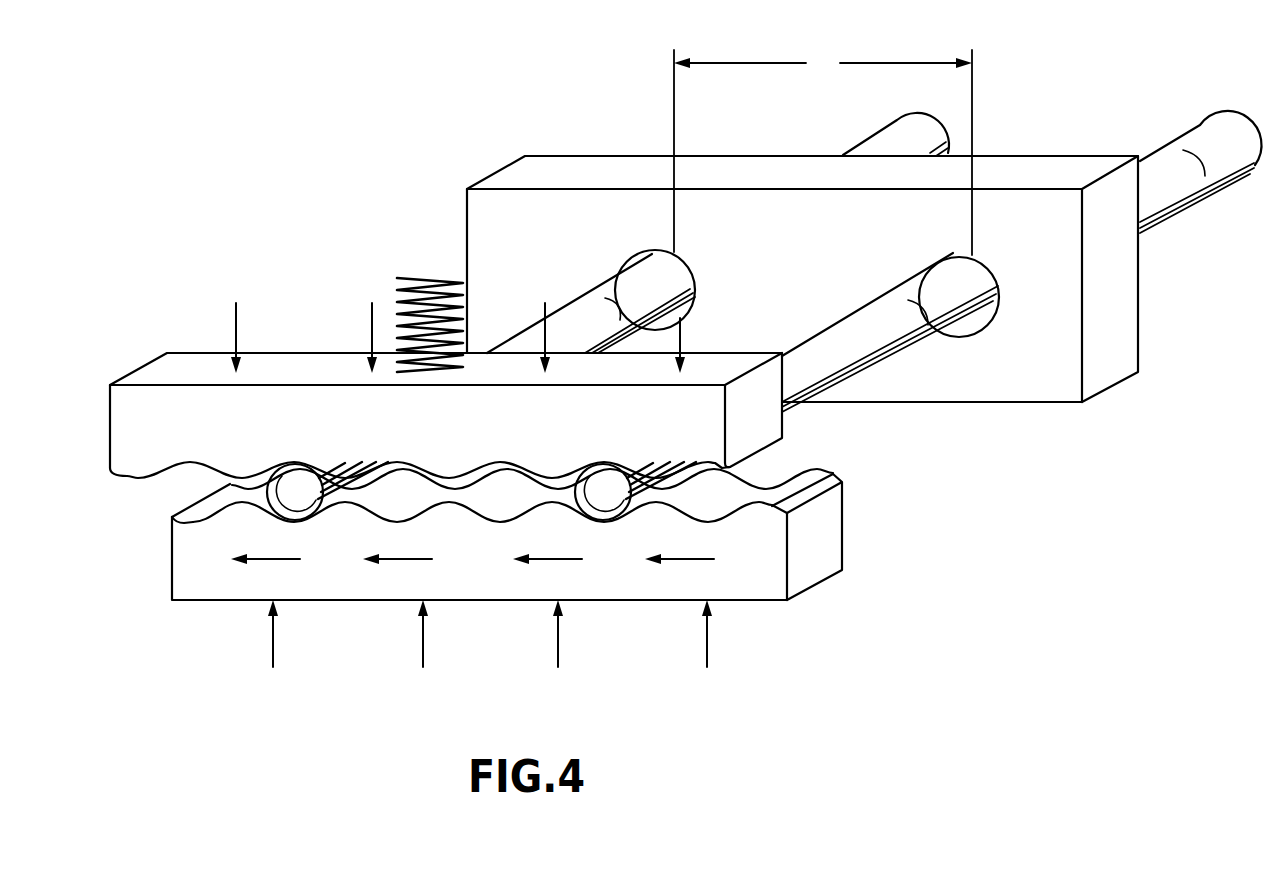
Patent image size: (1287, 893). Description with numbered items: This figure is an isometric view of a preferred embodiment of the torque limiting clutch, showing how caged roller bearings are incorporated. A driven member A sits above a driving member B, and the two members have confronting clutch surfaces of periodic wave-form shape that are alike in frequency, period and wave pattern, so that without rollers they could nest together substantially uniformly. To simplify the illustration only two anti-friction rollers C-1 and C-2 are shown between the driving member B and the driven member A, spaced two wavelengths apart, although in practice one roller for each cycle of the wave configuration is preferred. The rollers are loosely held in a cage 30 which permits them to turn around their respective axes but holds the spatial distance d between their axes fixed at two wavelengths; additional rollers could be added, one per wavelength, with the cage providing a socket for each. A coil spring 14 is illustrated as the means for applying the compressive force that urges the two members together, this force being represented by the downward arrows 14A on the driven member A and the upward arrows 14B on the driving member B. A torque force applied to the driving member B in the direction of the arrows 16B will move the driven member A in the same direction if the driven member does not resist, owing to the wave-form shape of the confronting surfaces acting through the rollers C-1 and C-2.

The cage 30 is at (533, 173).
The coil spring 14 is at (425, 278).
The compressive force arrows 14A is at (449, 322).
The compressive force arrows 14B is at (490, 651).
The torque force arrows 16B is at (481, 543).
The anti-friction roller C-1 is at (957, 290).
The anti-friction roller C-2 is at (653, 288).
The driven member A is at (758, 420).
The driving member B is at (808, 539).
The spatial distance d is at (823, 152).